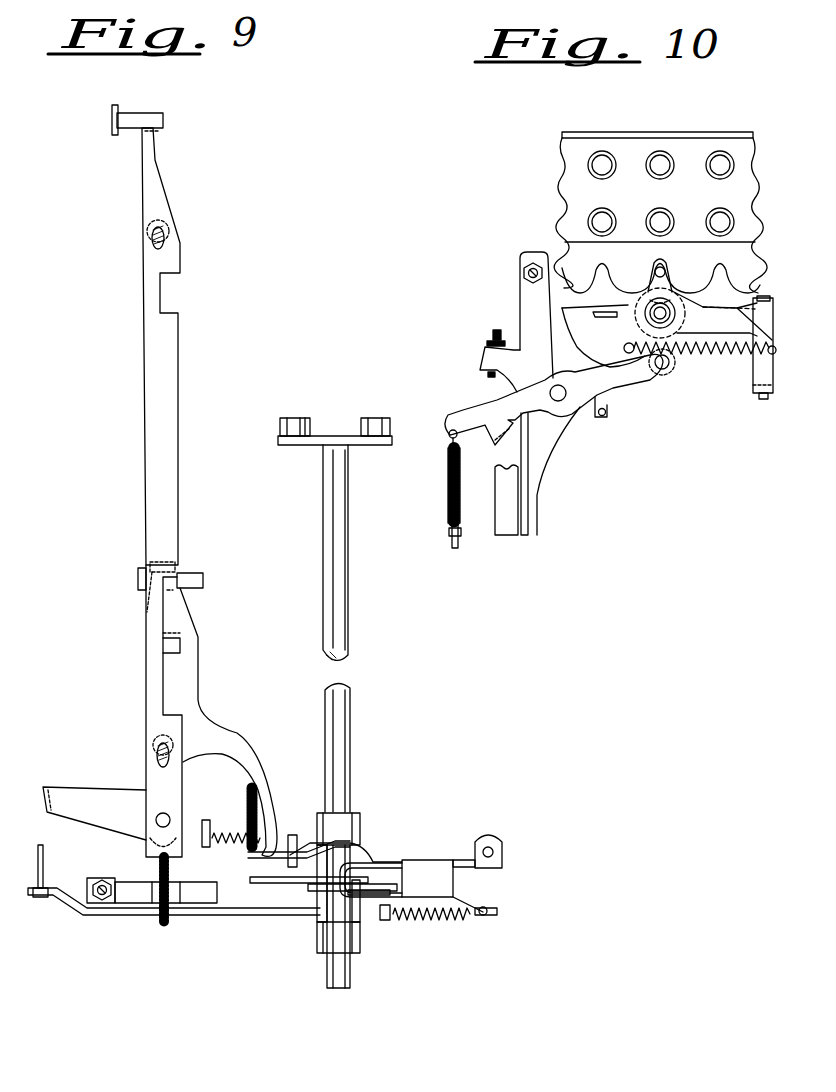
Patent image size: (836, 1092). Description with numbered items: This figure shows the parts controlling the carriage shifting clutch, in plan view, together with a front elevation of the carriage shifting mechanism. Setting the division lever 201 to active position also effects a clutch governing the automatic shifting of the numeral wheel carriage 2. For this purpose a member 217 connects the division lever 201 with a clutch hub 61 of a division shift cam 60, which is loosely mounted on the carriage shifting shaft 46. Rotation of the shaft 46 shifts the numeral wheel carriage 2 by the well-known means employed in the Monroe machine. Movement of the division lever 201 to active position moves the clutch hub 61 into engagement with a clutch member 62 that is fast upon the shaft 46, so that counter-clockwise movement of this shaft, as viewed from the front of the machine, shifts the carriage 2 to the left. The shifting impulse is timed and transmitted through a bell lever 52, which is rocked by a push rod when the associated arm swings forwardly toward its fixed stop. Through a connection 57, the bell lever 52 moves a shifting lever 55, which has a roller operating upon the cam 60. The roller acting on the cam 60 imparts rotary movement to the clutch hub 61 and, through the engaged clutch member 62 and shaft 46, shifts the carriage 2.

In FIG. 10, the numeral wheel carriage 2 is at (585, 190).
In FIG. 9, the carriage shifting shaft 46 is at (345, 745).
In FIG. 10, the carriage shifting shaft 46 is at (654, 312).
In FIG. 10, the bell lever 52 is at (456, 546).
In FIG. 10, the shifting lever 55 is at (478, 408).
In FIG. 10, the connection 57 is at (448, 500).
In FIG. 9, the division shift cam 60 is at (330, 863).
In FIG. 10, the division shift cam 60 is at (702, 358).
In FIG. 9, the clutch hub 61 is at (330, 884).
In FIG. 9, the clutch member 62 is at (357, 828).
In FIG. 9, the division lever 201 is at (117, 125).
In FIG. 9, the member 217 is at (142, 420).